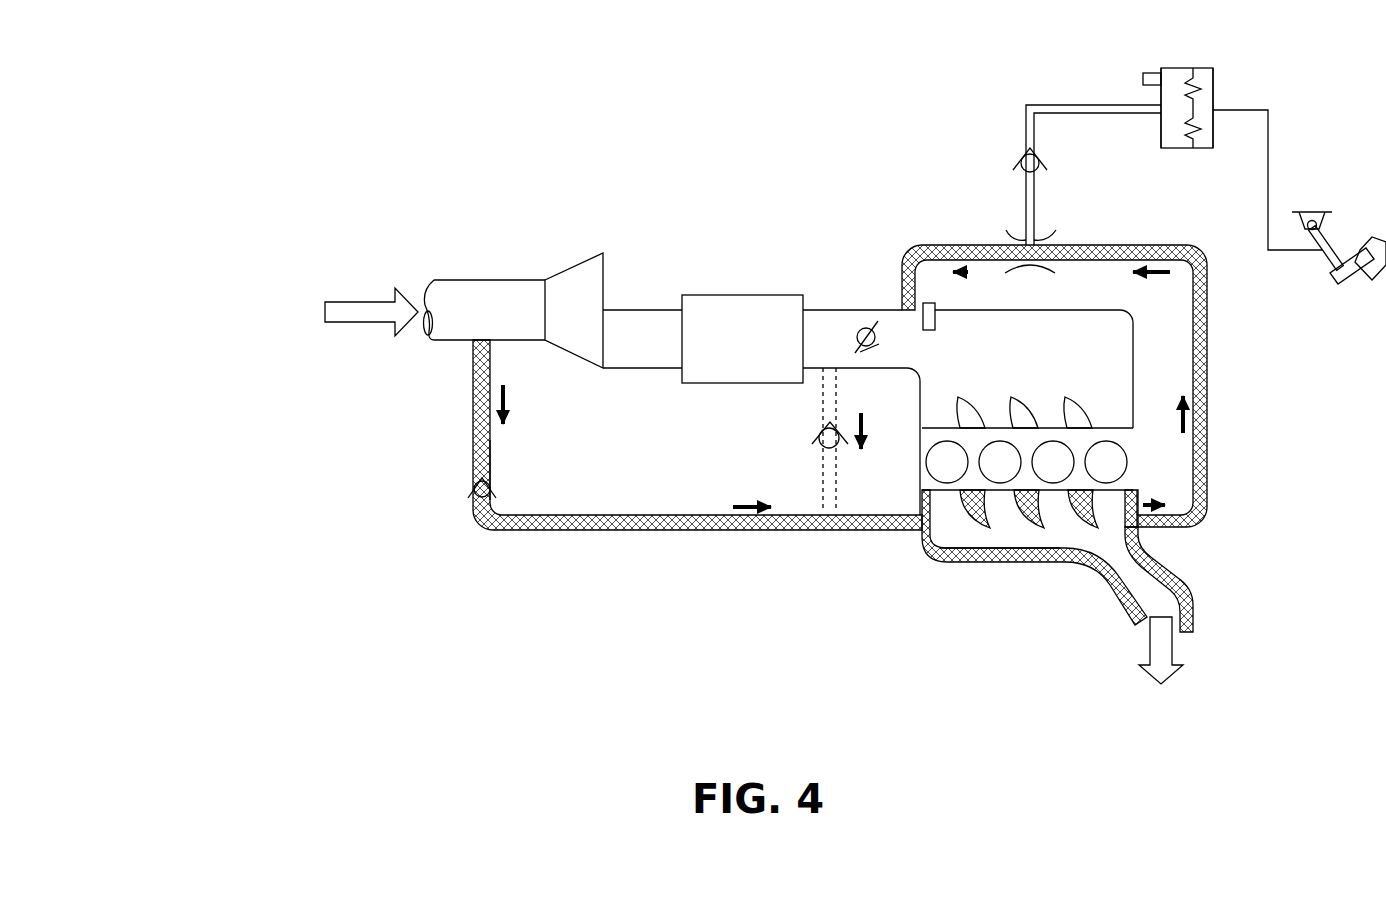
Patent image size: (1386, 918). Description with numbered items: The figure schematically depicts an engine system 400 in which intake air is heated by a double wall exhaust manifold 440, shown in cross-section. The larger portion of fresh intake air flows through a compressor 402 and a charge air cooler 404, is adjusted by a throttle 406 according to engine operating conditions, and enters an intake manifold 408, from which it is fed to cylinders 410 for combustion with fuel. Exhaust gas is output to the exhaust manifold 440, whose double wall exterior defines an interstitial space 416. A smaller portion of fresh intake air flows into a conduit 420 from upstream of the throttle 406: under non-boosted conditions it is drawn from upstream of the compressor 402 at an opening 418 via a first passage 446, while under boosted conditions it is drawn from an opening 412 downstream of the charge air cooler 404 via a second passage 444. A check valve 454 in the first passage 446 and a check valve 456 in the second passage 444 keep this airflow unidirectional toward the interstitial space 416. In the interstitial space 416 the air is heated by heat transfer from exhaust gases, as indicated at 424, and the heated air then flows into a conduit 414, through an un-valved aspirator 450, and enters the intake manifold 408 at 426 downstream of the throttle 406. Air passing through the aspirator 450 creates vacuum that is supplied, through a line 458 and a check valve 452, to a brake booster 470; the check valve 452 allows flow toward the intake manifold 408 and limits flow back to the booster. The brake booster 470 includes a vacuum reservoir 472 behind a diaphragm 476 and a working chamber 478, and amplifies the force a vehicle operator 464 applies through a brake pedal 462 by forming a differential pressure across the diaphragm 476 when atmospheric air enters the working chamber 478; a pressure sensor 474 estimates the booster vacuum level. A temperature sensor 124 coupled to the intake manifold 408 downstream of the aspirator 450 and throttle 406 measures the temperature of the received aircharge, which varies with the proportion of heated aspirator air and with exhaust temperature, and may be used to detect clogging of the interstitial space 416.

The engine system 400 is at (165, 80).
The compressor 402 is at (556, 318).
The charge air cooler 404 is at (725, 351).
The throttle 406 is at (878, 347).
The intake manifold 408 is at (1134, 353).
The cylinders 410 is at (1001, 427).
The opening 412 is at (846, 379).
The conduit 414 is at (1208, 272).
The interstitial space 416 is at (1037, 554).
The opening 418 is at (461, 346).
The conduit 420 is at (733, 531).
The heat transfer 424 is at (975, 572).
The entry point 426 is at (897, 294).
The double wall exhaust manifold 440 is at (1190, 580).
The second passage 444 is at (837, 476).
The first passage 446 is at (492, 453).
The aspirator 450 is at (997, 233).
The check valve 452 is at (1018, 160).
The check valve 454 is at (472, 488).
The check valve 456 is at (813, 444).
The conduit 458 is at (1062, 105).
The brake pedal 462 is at (1340, 270).
The vehicle operator 464 is at (1372, 240).
The brake booster 470 is at (1205, 66).
The brake booster vacuum reservoir 472 is at (1168, 118).
The pressure sensor 474 is at (1159, 72).
The diaphragm 476 is at (1183, 122).
The working chamber 478 is at (1208, 118).
The temperature sensor 124 is at (936, 306).